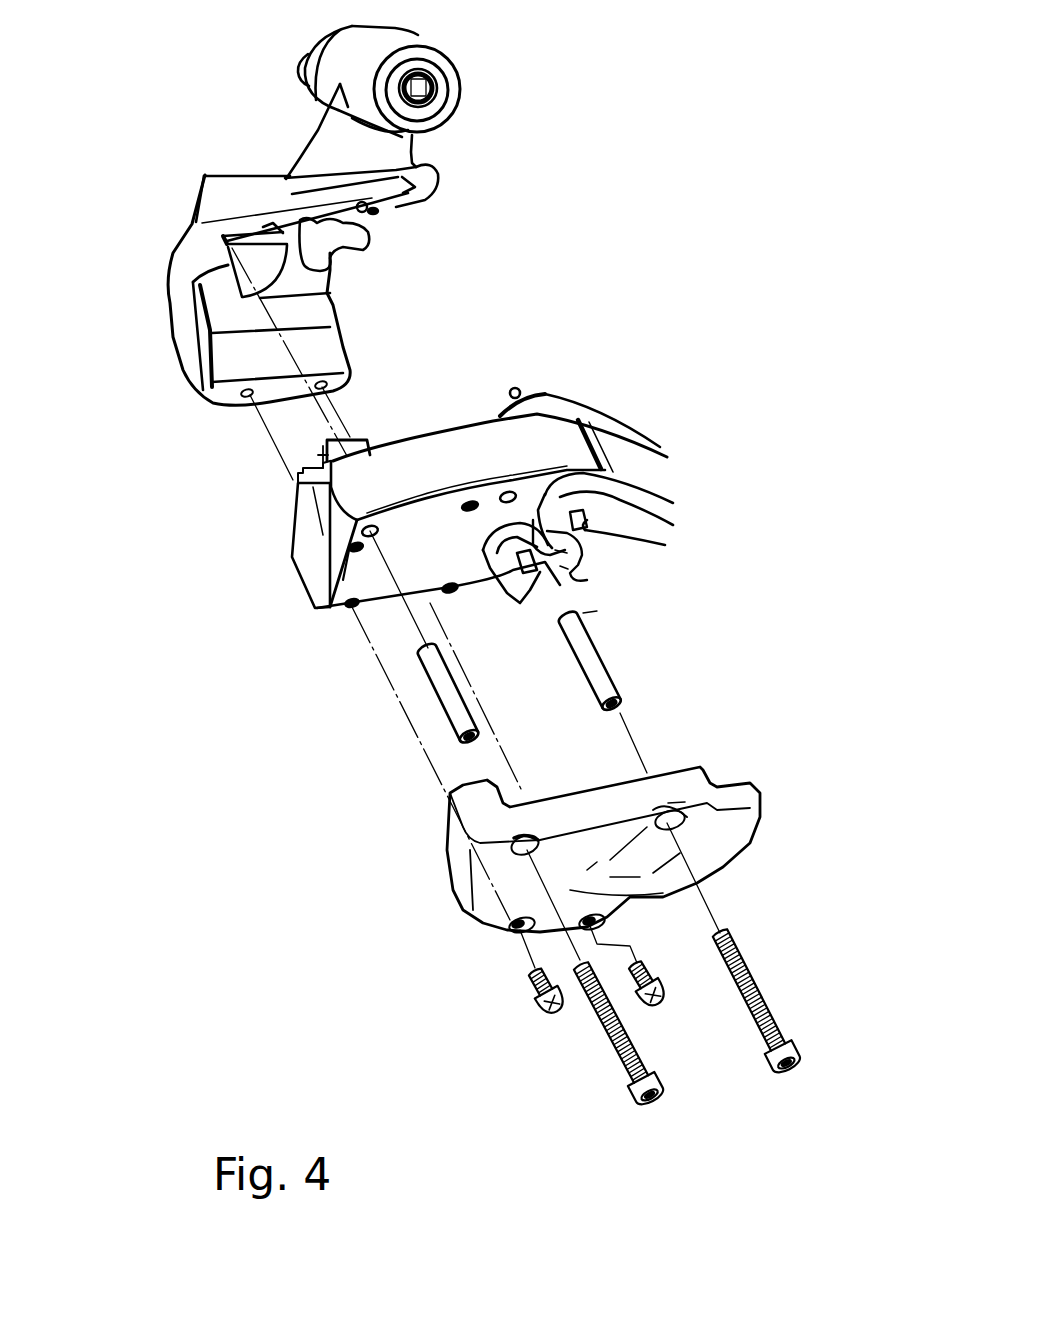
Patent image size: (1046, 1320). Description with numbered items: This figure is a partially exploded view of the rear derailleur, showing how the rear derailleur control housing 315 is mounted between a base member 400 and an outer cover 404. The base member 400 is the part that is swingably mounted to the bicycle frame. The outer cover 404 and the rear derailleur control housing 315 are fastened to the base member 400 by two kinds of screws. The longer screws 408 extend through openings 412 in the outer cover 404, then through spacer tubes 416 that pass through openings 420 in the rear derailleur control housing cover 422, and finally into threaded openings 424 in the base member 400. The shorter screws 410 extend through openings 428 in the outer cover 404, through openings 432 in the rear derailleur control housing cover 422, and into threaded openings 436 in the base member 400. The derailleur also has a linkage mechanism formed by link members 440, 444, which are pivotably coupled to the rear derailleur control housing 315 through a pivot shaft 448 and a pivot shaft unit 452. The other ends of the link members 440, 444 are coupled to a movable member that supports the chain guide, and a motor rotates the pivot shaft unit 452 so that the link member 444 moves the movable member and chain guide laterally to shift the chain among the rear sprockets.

The base member 400 is at (328, 130).
The threaded openings 424 is at (226, 238).
The threaded openings 436 is at (247, 396).
The openings 420 is at (405, 508).
The openings 432 is at (348, 607).
The rear derailleur control housing 315 is at (296, 540).
The rear derailleur control housing cover 422 is at (343, 580).
The pivot shaft 448 is at (514, 389).
The link member 440 is at (640, 470).
The link member 444 is at (590, 580).
The pivot shaft unit 452 is at (510, 500).
The spacer tubes 416 is at (447, 697).
The outer cover 404 is at (466, 866).
The openings 412 is at (554, 832).
The openings 428 is at (513, 927).
The screws 410 is at (545, 1010).
The screws 408 is at (640, 1112).